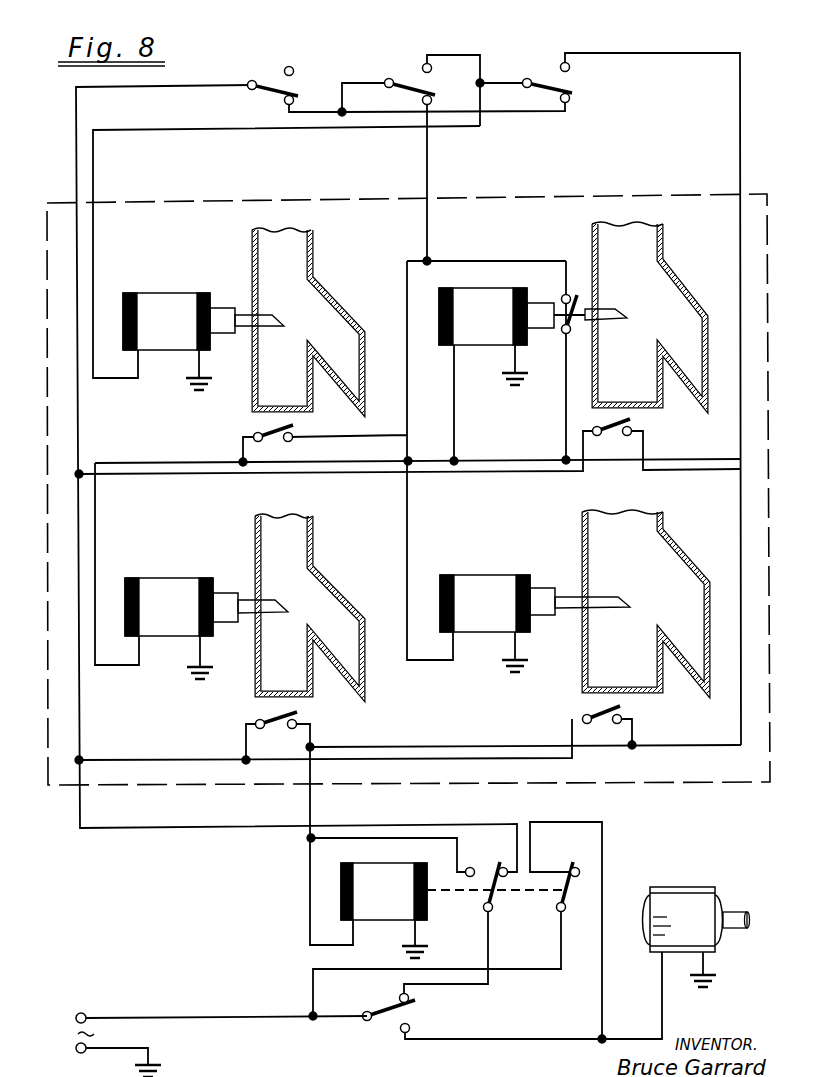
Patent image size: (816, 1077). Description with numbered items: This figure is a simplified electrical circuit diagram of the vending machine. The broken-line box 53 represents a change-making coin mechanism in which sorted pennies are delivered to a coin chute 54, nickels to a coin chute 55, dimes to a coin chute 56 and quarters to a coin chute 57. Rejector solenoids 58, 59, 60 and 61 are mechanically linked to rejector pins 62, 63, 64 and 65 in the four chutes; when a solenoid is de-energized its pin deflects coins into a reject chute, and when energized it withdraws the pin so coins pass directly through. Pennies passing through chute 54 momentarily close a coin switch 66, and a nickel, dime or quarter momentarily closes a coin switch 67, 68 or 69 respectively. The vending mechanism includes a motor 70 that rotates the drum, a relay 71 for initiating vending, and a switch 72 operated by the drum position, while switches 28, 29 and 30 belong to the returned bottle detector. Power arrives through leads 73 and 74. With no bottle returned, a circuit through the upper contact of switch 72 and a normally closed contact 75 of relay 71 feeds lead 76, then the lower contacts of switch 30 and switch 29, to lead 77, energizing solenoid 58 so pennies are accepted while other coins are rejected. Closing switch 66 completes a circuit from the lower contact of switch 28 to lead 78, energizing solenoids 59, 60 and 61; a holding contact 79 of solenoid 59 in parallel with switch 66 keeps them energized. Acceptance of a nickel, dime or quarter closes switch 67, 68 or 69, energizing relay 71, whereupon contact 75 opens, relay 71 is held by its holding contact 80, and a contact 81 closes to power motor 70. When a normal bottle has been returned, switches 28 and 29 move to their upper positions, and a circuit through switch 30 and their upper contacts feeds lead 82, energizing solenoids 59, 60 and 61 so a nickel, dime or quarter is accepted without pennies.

The switch 28 is at (408, 80).
The switch 29 is at (545, 79).
The switch 30 is at (270, 82).
The change-making coin mechanism 53 is at (720, 784).
The coin chute 54 is at (250, 262).
The coin chute 55 is at (590, 264).
The coin chute 56 is at (254, 553).
The coin chute 57 is at (580, 553).
The rejector solenoid 58 is at (172, 290).
The rejector solenoid 59 is at (486, 290).
The rejector solenoid 60 is at (172, 582).
The rejector solenoid 61 is at (486, 578).
The rejector pin 62 is at (284, 322).
The rejector pin 63 is at (628, 314).
The rejector pin 64 is at (284, 612).
The rejector pin 65 is at (630, 606).
The coin switch 66 is at (274, 429).
The coin switch 67 is at (633, 420).
The coin switch 68 is at (277, 716).
The coin switch 69 is at (601, 710).
The motor 70 is at (684, 886).
The relay 71 is at (382, 860).
The switch 72 is at (386, 1018).
The lead 73 is at (132, 1014).
The lead 74 is at (130, 1058).
The normally closed contact 75 is at (506, 869).
The lead 76 is at (166, 828).
The lead 77 is at (176, 131).
The lead 78 is at (318, 453).
The holding contact 79 is at (561, 297).
The holding contact 80 is at (470, 868).
The contact 81 is at (570, 870).
The lead 82 is at (738, 108).